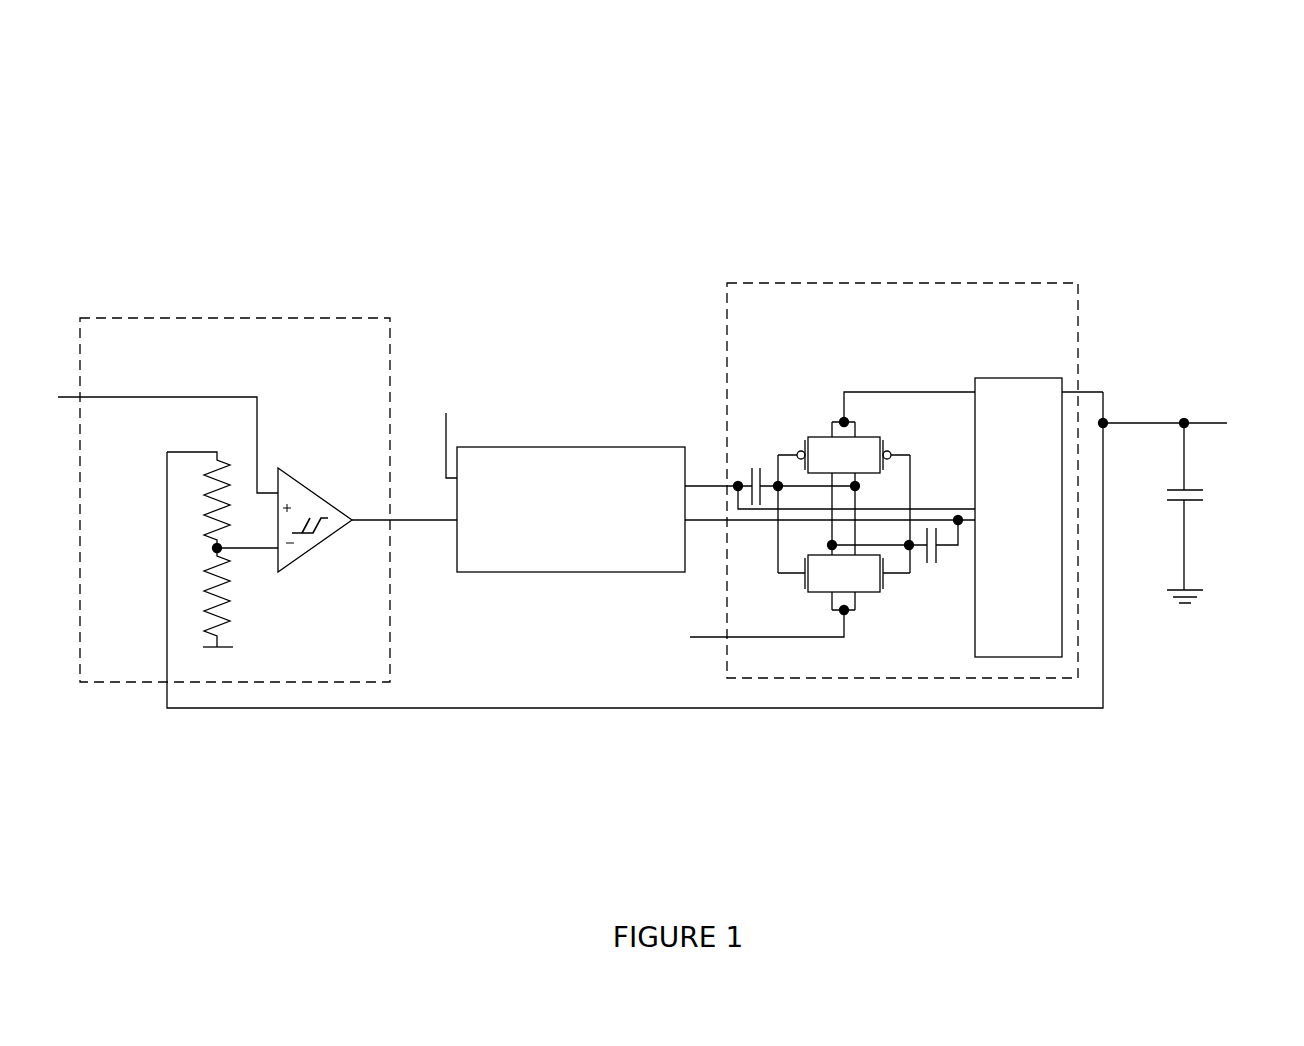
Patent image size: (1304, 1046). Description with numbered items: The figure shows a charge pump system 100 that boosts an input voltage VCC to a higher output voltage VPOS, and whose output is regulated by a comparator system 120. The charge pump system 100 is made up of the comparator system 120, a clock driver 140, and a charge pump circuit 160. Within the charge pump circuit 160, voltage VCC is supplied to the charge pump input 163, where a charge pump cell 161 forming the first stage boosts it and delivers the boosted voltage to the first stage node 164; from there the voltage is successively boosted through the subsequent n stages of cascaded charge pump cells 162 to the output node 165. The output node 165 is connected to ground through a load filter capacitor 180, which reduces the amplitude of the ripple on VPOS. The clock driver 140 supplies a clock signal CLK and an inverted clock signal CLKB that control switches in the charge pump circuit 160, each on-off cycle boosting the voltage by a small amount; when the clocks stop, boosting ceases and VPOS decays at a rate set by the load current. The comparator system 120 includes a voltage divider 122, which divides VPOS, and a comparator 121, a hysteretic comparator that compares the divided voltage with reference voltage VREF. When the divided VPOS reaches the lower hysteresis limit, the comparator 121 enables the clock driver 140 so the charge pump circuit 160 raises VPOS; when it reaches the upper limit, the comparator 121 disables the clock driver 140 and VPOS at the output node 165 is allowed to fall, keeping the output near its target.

The charge pump system 100 is at (1177, 146).
The comparator system 120 is at (235, 500).
The comparator 121 is at (314, 578).
The voltage divider 122 is at (254, 629).
The clock driver 140 is at (705, 483).
The charge pump circuit 160 is at (902, 480).
The charge pump cell 161 is at (807, 409).
The cascaded charge pump cells 162 is at (1018, 517).
The charge pump input 163 is at (703, 658).
The first stage node 164 is at (947, 351).
The output node 165 is at (1166, 399).
The load filter capacitor 180 is at (1214, 503).